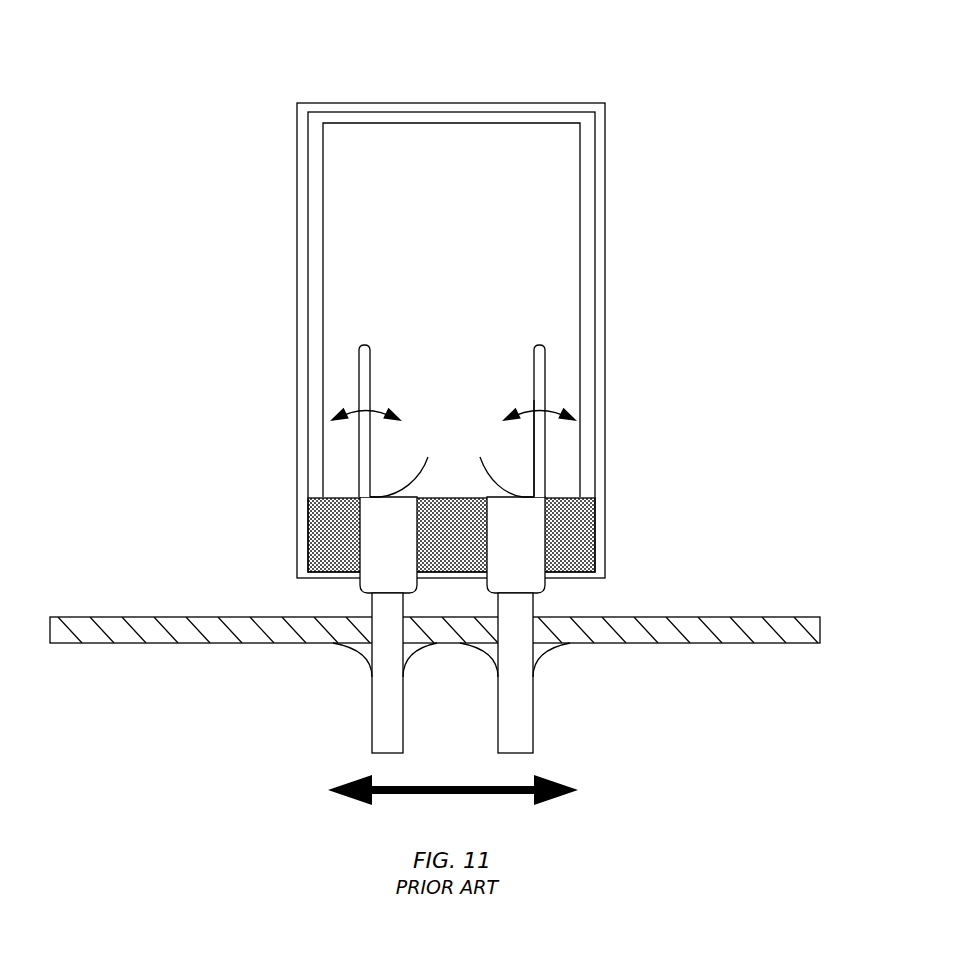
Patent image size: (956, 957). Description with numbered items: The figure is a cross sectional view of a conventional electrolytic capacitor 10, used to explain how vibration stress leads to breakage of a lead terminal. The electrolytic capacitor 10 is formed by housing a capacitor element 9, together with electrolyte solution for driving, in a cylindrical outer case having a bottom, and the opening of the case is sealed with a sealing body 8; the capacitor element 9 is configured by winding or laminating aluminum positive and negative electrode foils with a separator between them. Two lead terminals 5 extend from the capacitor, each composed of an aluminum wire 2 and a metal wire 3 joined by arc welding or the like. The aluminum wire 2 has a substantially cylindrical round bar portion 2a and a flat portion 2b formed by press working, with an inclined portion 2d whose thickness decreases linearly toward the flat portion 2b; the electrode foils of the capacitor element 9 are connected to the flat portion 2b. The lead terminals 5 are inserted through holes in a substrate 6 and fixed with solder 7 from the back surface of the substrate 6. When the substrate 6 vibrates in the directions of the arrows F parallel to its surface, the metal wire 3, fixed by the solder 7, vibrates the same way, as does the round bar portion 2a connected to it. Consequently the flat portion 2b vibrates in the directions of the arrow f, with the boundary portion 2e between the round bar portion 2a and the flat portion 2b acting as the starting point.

The electrolytic capacitor 10 is at (276, 96).
The capacitor element 9 is at (558, 245).
The aluminum wire 2 is at (333, 471).
The sealing body 8 is at (309, 533).
The round bar portion 2a is at (535, 565).
The lead terminal 5 is at (349, 328).
The flat portion 2b is at (553, 356).
The boundary portion 2e is at (570, 476).
The inclined portion 2d is at (452, 463).
The arrow f is at (453, 399).
The substrate 6 is at (127, 633).
The metal wire 3 is at (388, 697).
The solder 7 is at (560, 645).
The arrows F is at (453, 803).